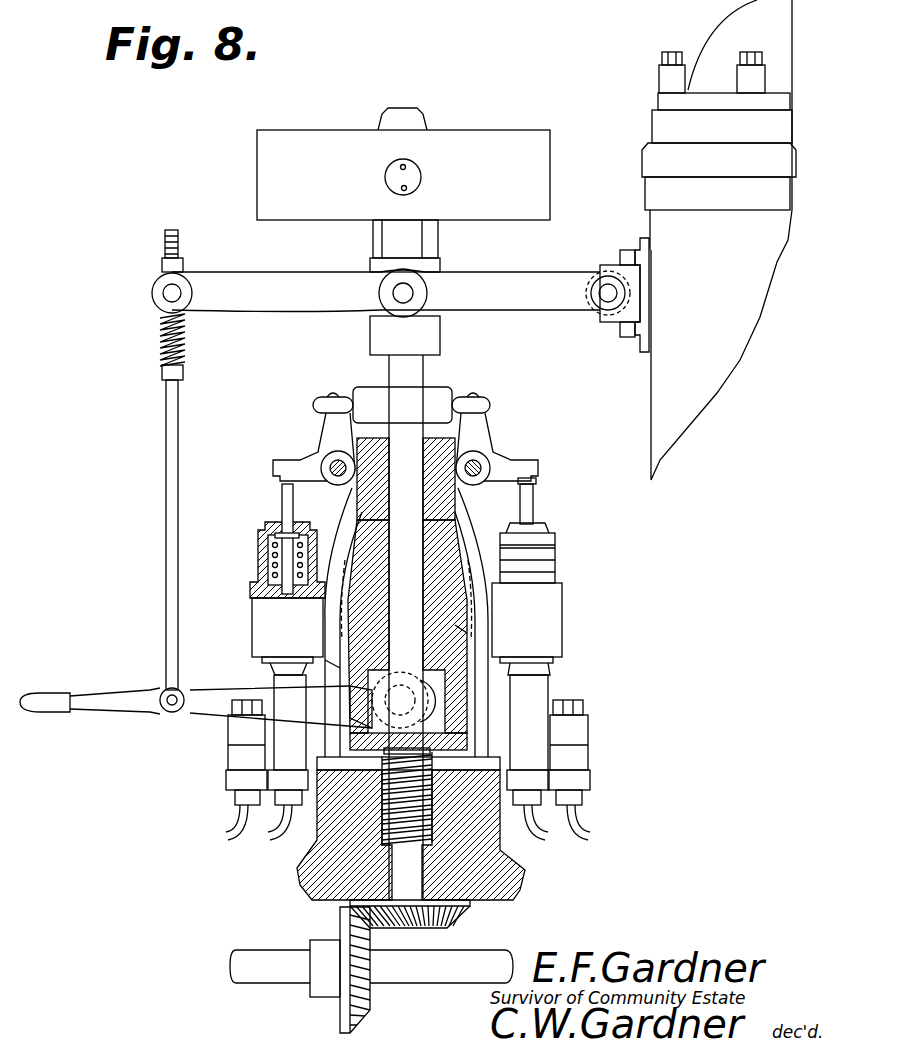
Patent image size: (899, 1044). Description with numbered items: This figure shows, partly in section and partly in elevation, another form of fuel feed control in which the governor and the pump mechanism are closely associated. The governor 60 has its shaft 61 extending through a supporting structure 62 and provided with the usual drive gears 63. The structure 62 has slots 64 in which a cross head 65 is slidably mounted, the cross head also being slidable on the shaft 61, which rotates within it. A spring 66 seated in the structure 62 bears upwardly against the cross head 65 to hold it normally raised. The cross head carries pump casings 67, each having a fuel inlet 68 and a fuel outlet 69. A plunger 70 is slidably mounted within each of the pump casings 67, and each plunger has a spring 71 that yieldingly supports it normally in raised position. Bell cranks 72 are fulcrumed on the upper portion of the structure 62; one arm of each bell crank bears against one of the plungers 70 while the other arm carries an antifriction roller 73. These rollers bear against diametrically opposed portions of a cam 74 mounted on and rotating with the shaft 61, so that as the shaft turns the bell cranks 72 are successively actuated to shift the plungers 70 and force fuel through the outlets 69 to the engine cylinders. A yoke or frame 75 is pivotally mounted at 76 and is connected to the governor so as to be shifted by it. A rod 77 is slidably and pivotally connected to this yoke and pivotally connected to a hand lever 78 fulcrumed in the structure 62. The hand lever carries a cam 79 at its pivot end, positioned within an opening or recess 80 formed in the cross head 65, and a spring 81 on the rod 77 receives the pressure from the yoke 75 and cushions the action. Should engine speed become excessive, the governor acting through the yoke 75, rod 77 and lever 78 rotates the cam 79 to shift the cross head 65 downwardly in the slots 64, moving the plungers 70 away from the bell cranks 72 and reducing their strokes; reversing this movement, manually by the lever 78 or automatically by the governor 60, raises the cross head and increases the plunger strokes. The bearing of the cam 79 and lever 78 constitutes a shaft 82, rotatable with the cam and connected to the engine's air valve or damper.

The governor 60 is at (403, 231).
The shaft 61 is at (415, 371).
The supporting structure 62 is at (512, 880).
The drive gears 63 is at (433, 930).
The slots 64 is at (480, 572).
The cross head 65 is at (455, 629).
The spring 66 is at (382, 840).
The pump casings 67 is at (254, 633).
The fuel inlet 68 is at (236, 815).
The fuel outlet 69 is at (383, 823).
The plunger 70 is at (535, 500).
The spring 71 is at (258, 538).
The bell cranks 72 is at (330, 429).
The antifriction roller 73 is at (485, 400).
The cam 74 is at (375, 395).
The yoke or frame 75 is at (493, 285).
The pivot 76 is at (606, 300).
The rod 77 is at (165, 442).
The hand lever 78 is at (120, 703).
The cam 79 is at (385, 712).
The opening or recess 80 is at (400, 697).
The spring 81 is at (160, 332).
The shaft 82 is at (330, 662).